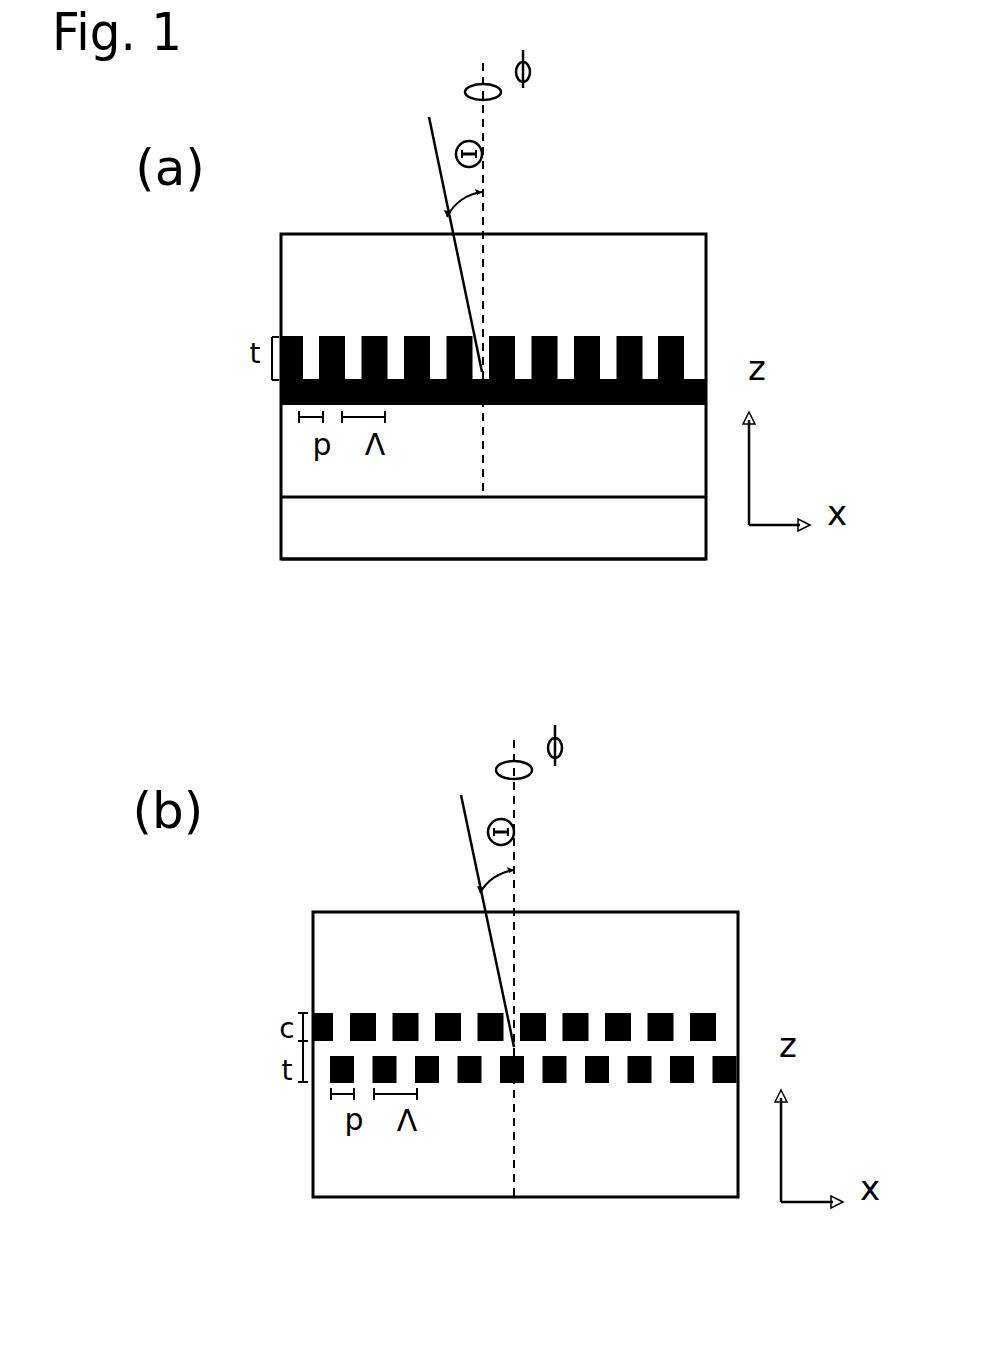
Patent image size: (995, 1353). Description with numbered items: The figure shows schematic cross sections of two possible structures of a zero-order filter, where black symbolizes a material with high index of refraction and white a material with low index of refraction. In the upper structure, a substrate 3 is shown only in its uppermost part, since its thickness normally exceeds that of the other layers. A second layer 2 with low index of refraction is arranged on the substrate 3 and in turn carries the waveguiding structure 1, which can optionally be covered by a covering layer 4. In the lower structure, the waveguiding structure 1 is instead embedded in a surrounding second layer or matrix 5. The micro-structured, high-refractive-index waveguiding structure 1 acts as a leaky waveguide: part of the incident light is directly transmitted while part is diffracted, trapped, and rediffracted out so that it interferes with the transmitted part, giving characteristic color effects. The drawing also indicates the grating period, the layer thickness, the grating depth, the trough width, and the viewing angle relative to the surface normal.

The waveguiding structure 1 is at (685, 337).
The second layer 2 is at (670, 478).
The substrate 3 is at (670, 533).
The covering layer 4 is at (670, 280).
The surrounding second layer 5 is at (703, 957).